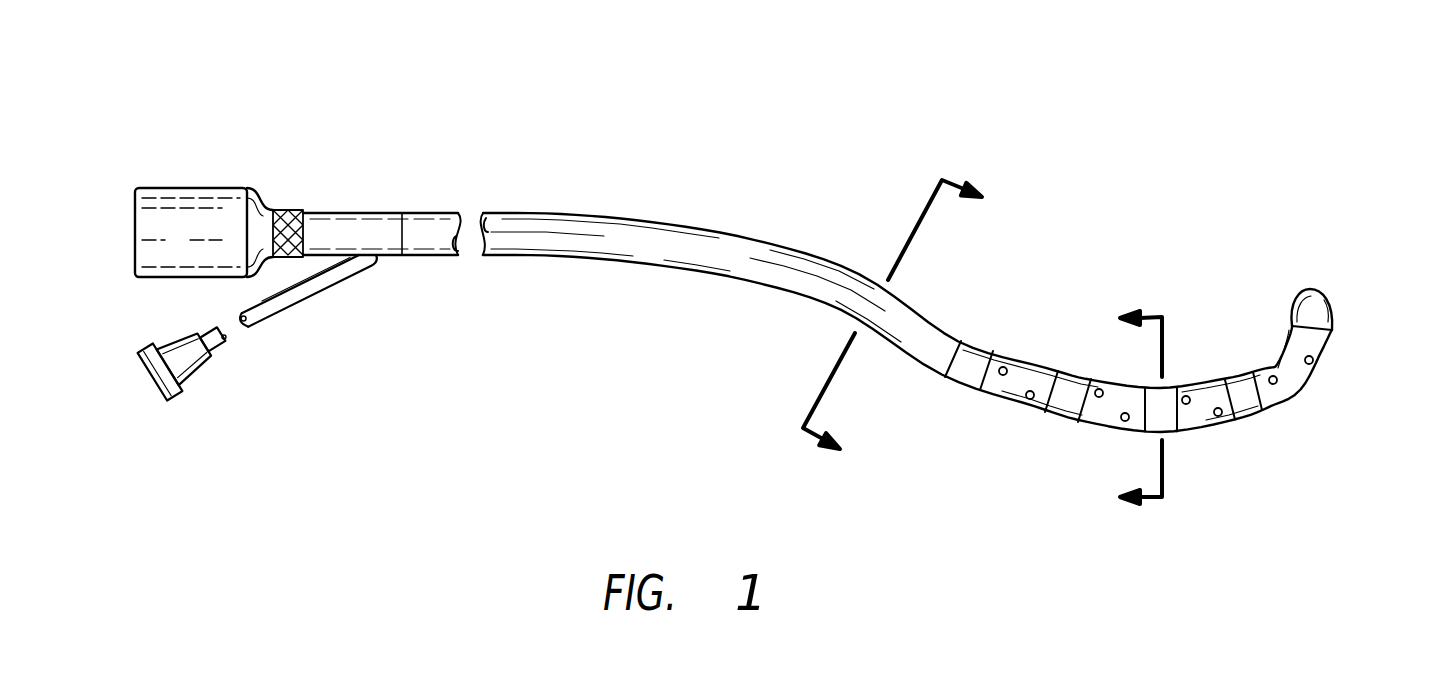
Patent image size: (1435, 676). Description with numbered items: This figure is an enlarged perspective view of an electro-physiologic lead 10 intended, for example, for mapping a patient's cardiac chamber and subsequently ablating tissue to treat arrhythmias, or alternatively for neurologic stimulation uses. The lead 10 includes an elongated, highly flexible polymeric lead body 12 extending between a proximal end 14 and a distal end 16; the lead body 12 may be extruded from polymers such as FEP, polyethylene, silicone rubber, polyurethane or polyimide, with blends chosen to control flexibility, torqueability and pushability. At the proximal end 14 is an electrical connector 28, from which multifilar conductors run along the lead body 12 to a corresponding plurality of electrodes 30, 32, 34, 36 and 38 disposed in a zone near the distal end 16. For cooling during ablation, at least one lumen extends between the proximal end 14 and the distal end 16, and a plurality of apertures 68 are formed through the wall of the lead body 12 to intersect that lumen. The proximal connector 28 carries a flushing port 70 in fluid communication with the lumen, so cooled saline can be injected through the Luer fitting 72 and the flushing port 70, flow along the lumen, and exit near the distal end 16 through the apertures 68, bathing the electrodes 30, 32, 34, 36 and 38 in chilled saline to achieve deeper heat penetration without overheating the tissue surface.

The electro-physiologic lead 10 is at (696, 156).
The lead body 12 is at (628, 215).
The proximal end 14 is at (401, 213).
The distal end 16 is at (1318, 292).
The electrical connector 28 is at (186, 188).
The electrode 30 is at (1334, 309).
The electrode 32 is at (1256, 420).
The electrode 34 is at (1166, 432).
The electrode 36 is at (1057, 418).
The electrode 38 is at (975, 342).
The apertures 68 is at (1030, 391).
The flushing port 70 is at (293, 306).
The Luer fitting 72 is at (181, 394).